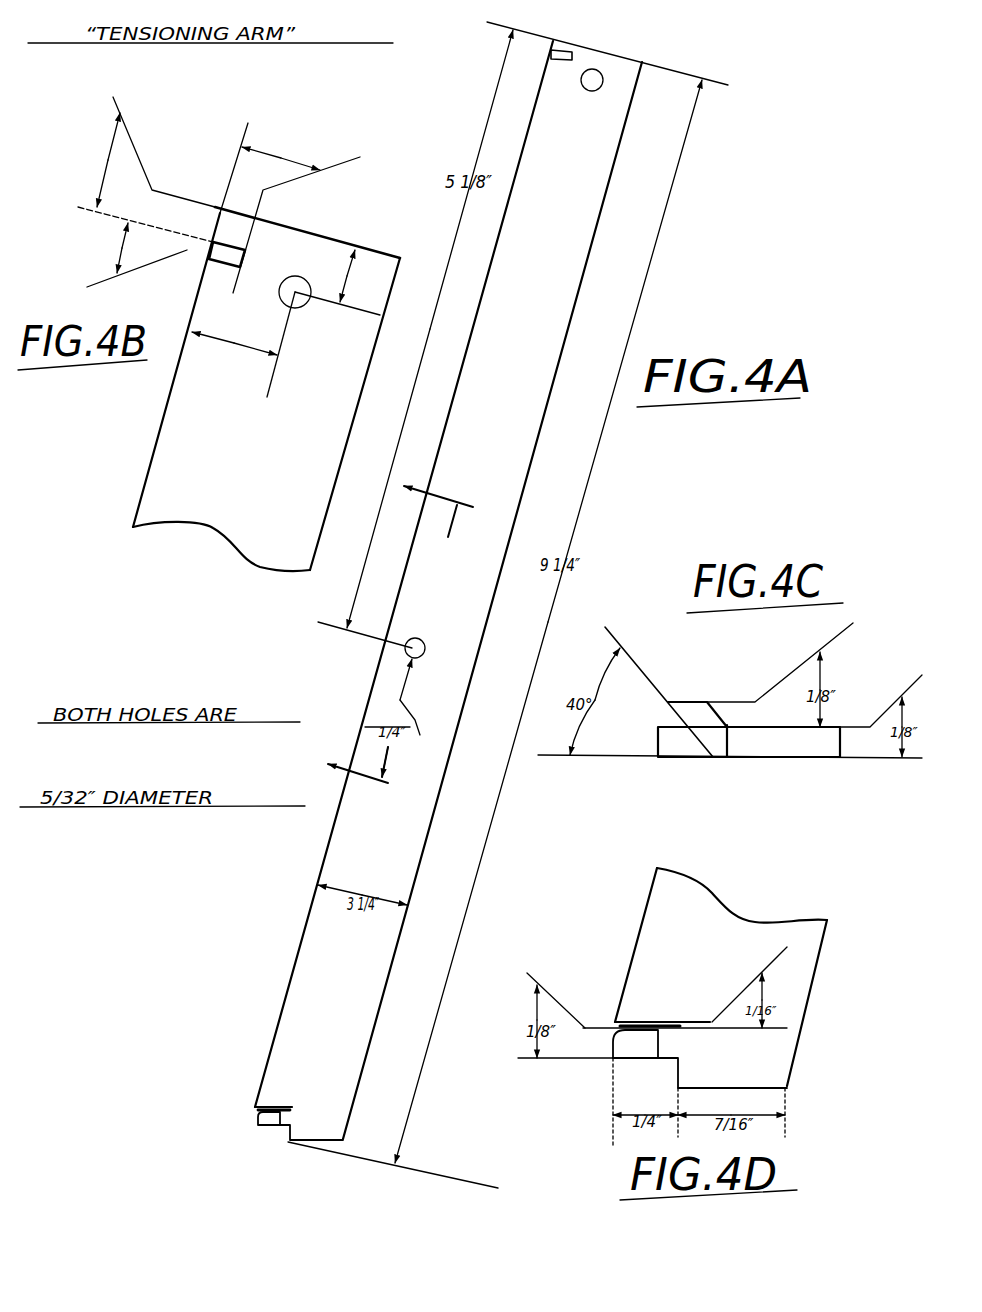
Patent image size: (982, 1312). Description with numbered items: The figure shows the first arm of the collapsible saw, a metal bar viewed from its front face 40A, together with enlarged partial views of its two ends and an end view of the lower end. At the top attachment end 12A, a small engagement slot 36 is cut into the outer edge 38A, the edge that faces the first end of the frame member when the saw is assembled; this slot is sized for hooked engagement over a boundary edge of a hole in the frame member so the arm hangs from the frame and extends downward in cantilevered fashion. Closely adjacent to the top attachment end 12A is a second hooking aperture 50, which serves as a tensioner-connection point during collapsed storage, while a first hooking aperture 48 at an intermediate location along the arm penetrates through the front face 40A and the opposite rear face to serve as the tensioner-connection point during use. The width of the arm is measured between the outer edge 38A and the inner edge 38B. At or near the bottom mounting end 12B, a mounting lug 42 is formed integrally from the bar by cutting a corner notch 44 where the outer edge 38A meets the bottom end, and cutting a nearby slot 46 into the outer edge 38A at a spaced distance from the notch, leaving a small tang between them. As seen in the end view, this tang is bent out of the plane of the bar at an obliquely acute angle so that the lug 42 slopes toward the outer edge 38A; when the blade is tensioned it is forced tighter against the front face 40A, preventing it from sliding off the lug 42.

In FIG. 4A, the top attachment end 12A is at (602, 50).
In FIG. 4A, the bottom mounting end 12B is at (287, 1143).
In FIG. 4C, the bottom mounting end 12B is at (787, 752).
In FIG. 4B, the engagement slot 36 is at (222, 260).
In FIG. 4A, the engagement slot 36 is at (555, 59).
In FIG. 4B, the outer edge 38A is at (160, 430).
In FIG. 4A, the outer edge 38A is at (377, 673).
In FIG. 4C, the outer edge 38A is at (658, 743).
In FIG. 4D, the outer edge 38A is at (638, 938).
In FIG. 4B, the inner edge 38B is at (311, 567).
In FIG. 4A, the inner edge 38B is at (542, 422).
In FIG. 4C, the inner edge 38B is at (840, 751).
In FIG. 4D, the inner edge 38B is at (812, 987).
In FIG. 4B, the front face 40A is at (239, 334).
In FIG. 4A, the front face 40A is at (448, 590).
In FIG. 4A, the mounting lug 42 is at (263, 1120).
In FIG. 4C, the mounting lug 42 is at (693, 713).
In FIG. 4D, the mounting lug 42 is at (637, 1048).
In FIG. 4A, the corner notch 44 is at (268, 1135).
In FIG. 4D, the corner notch 44 is at (640, 1075).
In FIG. 4A, the slot 46 is at (272, 1106).
In FIG. 4C, the slot 46 is at (690, 745).
In FIG. 4D, the slot 46 is at (642, 1024).
In FIG. 4A, the first hooking aperture 48 is at (422, 644).
In FIG. 4A, the second hooking aperture 50 is at (581, 88).